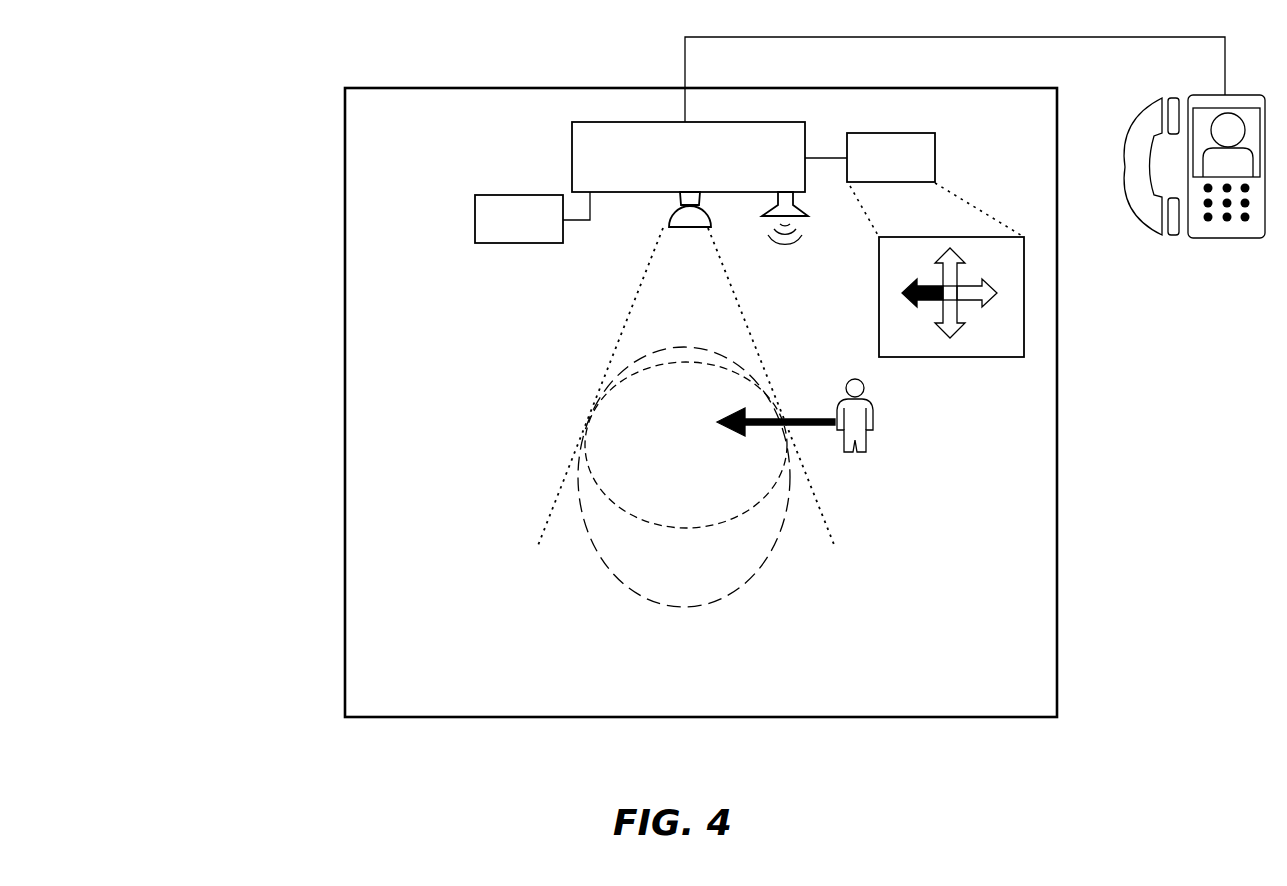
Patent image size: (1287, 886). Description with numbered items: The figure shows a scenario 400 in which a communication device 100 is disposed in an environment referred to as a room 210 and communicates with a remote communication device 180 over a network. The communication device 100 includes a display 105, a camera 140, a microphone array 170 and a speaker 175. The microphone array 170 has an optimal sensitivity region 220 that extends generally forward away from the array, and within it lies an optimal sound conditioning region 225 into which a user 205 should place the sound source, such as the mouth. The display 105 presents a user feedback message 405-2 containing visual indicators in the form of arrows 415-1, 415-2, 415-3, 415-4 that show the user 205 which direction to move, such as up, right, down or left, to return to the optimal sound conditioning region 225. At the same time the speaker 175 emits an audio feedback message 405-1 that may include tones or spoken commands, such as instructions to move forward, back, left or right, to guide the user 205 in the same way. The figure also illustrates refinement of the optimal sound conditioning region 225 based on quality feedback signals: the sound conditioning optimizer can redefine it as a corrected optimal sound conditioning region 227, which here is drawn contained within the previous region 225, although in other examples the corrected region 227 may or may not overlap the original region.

The scenario 400 is at (140, 46).
The room 210 is at (345, 122).
The communication device 100 is at (572, 158).
The display device 105 is at (862, 133).
The camera 140 is at (475, 212).
The microphone array 170 is at (670, 220).
The speaker 175 is at (763, 215).
The remote communication device 180 is at (1150, 100).
The user 205 is at (843, 402).
The optimal sensitivity region 220 is at (648, 266).
The optimal sound conditioning region 225 is at (678, 348).
The corrected optimal sound conditioning region 227 is at (710, 525).
The audio feedback message 405-1 is at (784, 250).
The user feedback message 405-2 is at (922, 224).
The visual indicator 415-1 is at (958, 268).
The visual indicator 415-2 is at (974, 286).
The visual indicator 415-3 is at (958, 314).
The visual indicator 415-4 is at (926, 287).